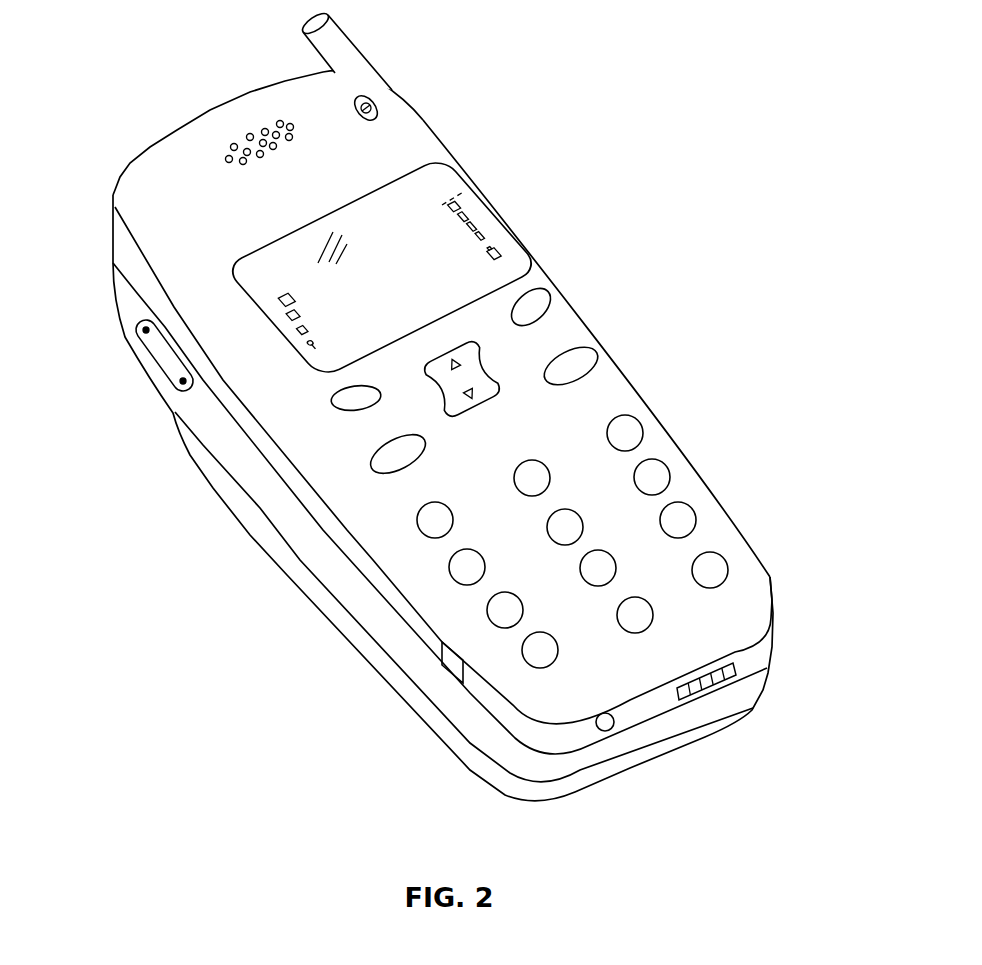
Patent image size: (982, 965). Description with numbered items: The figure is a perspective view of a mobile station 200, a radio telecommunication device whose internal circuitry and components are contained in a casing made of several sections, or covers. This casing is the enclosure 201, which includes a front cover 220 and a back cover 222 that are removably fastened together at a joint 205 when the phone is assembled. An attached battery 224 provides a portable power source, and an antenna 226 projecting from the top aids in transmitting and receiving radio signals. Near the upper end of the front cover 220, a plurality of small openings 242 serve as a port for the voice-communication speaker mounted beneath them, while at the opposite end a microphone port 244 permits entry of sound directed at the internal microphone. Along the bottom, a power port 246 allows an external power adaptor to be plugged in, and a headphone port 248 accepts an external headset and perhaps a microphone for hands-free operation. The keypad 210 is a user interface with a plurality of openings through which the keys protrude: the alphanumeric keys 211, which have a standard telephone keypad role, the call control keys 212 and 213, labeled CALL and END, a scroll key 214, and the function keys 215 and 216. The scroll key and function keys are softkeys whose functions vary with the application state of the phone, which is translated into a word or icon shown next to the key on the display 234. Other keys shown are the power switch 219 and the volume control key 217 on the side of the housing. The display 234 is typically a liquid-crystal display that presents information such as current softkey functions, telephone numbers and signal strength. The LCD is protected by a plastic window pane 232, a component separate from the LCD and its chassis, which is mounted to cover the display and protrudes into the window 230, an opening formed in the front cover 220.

The mobile station 200 is at (717, 225).
The enclosure 201 is at (83, 227).
The joint 205 is at (137, 293).
The keypad 210 is at (613, 383).
The alphanumeric keys 211 is at (687, 483).
The call control key (CALL) 212 is at (380, 462).
The call control key (END) 213 is at (603, 350).
The scroll key 214 is at (490, 338).
The function key 215 is at (342, 408).
The function key 216 is at (548, 298).
The volume control key 217 is at (150, 352).
The power switch 219 is at (378, 113).
The front cover 220 is at (772, 582).
The back cover 222 is at (767, 672).
The battery 224 is at (753, 708).
The antenna 226 is at (341, 30).
The window 230 is at (443, 162).
The window pane 232 is at (463, 172).
The display 234 is at (450, 185).
The small openings 242 is at (247, 124).
The microphone port 244 is at (457, 678).
The power port 246 is at (594, 732).
The headphone port 248 is at (677, 693).